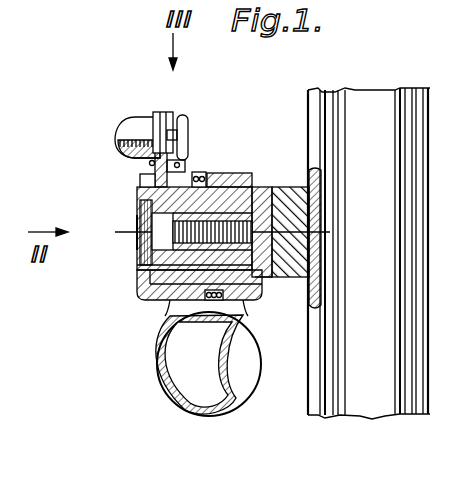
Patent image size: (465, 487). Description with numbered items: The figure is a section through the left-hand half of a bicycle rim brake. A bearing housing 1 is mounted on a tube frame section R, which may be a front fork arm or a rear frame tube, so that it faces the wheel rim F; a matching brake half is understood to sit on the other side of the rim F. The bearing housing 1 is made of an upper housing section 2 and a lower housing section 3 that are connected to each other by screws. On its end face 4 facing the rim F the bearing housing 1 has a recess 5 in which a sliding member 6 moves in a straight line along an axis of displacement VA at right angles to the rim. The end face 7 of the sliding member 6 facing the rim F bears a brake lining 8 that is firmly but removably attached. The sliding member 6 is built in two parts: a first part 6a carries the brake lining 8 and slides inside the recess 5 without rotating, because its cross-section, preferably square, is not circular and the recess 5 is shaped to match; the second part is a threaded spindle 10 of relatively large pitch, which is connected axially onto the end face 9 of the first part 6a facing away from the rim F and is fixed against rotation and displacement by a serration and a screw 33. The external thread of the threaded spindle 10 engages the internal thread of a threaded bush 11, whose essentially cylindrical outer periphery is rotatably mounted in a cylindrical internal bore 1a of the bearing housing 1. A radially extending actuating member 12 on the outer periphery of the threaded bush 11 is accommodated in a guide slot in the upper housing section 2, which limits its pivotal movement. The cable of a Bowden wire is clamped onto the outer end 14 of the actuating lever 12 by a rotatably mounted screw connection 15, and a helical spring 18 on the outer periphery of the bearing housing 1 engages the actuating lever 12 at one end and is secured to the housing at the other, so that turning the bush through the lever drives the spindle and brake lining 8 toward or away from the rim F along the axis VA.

The bearing housing 1 is at (135, 232).
The cylindrical internal bore 1a is at (136, 220).
The upper housing section 2 is at (138, 192).
The lower housing section 3 is at (160, 286).
The end face 4 is at (253, 173).
The recess 5 is at (206, 172).
The sliding member 6 is at (260, 187).
The first part of the sliding member 6a is at (271, 277).
The end face of the sliding member 7 is at (280, 187).
The brake lining 8 is at (300, 187).
The end face of the first part 9 is at (253, 300).
The threaded spindle 10 is at (156, 302).
The threaded bush 11 is at (140, 266).
The actuating member 12 is at (150, 180).
The outer end of the actuating lever 14 is at (160, 116).
The screw connection 15 is at (138, 115).
The helical spring 18 is at (190, 155).
The screw 33 is at (140, 247).
The wheel rim F is at (390, 95).
The tube frame section R is at (188, 407).
The axis of displacement VA is at (316, 214).